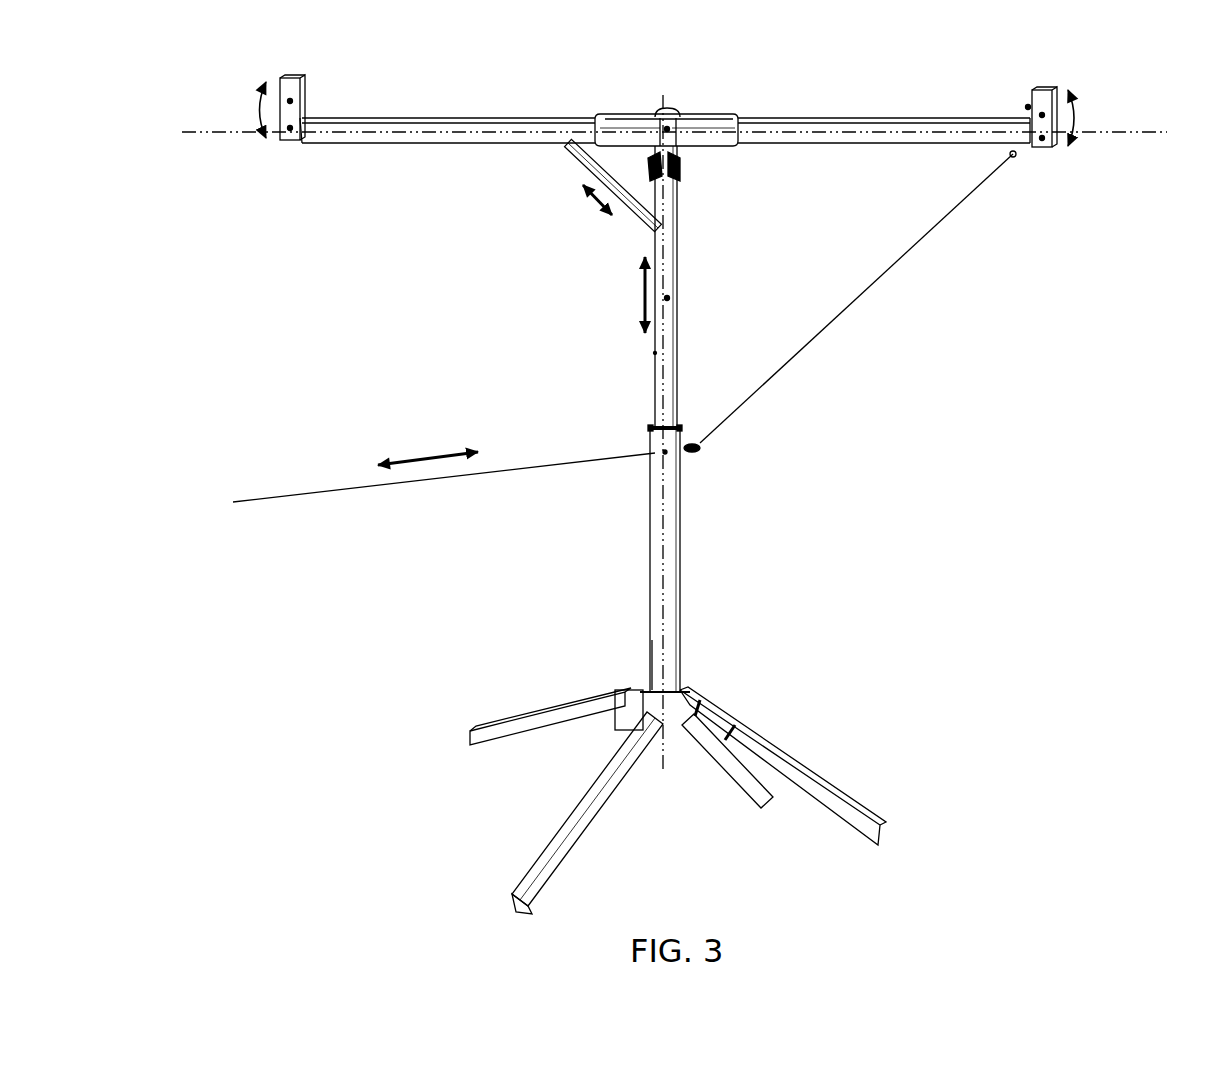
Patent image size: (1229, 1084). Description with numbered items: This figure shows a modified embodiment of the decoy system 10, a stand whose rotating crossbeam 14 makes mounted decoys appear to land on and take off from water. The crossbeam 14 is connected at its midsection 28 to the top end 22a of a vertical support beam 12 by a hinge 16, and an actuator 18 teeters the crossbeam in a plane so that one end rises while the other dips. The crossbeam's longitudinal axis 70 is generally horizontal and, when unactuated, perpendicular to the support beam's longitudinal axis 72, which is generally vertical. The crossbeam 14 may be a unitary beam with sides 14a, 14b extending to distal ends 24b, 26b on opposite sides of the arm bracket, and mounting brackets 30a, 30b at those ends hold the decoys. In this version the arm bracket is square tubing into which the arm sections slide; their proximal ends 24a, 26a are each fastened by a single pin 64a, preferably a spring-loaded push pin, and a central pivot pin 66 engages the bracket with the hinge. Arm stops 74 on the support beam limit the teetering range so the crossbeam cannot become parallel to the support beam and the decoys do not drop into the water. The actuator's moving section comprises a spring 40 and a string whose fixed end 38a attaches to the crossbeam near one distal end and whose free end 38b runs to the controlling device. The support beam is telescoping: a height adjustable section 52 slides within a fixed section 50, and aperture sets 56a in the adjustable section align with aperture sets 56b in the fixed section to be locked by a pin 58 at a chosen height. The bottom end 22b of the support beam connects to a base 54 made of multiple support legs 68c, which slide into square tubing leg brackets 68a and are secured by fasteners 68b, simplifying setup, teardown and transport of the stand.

The decoy system 10 is at (150, 61).
The support beam 12 is at (674, 432).
The crossbeam 14 is at (666, 131).
The crossbeam side 14a is at (475, 123).
The crossbeam side 14b is at (920, 123).
The hinge 16 is at (669, 128).
The actuator 18 is at (550, 436).
The top end of support beam 22a is at (678, 253).
The bottom end of support beam 22b is at (670, 600).
The proximal end of first arm 24a is at (608, 123).
The distal end of first side 24b is at (303, 144).
The proximal end of second arm 26a is at (740, 125).
The distal end of second side 26b is at (1032, 145).
The midsection of crossbeam 28 is at (712, 97).
The mounting bracket 30a is at (302, 97).
The mounting bracket 30b is at (1040, 97).
The fixed end of string 38a is at (1014, 158).
The free end of string 38b is at (290, 490).
The spring 40 is at (633, 214).
The fixed section 50 is at (660, 678).
The height adjustable section 52 is at (655, 353).
The base 54 is at (572, 748).
The aperture sets of telescoping section 56a is at (674, 428).
The aperture sets of fixed section 56b is at (666, 452).
The pin 58 is at (666, 453).
The pin 64a is at (625, 135).
The central pivot pin 66 is at (665, 130).
The leg bracket 68a is at (623, 710).
The fastener 68b is at (668, 717).
The support legs 68c is at (593, 717).
The longitudinal axis of crossbeam 70 is at (1145, 132).
The longitudinal axis of support beam 72 is at (663, 767).
The arm stops 74 is at (656, 167).